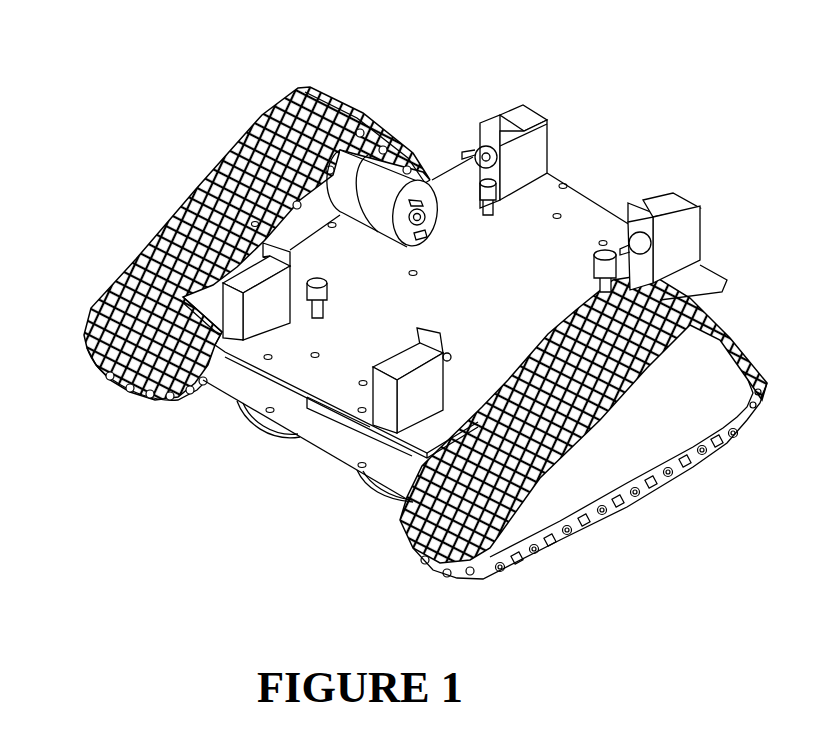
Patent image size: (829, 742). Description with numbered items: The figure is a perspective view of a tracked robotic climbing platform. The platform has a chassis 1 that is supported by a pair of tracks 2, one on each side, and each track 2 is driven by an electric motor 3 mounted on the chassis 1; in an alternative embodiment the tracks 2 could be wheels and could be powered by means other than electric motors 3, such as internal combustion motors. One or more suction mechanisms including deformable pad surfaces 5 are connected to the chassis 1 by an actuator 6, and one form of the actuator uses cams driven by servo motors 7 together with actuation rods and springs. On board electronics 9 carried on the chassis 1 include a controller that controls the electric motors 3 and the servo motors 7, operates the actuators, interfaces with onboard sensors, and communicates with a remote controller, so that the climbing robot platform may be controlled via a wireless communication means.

The chassis 1 is at (592, 207).
The tracks 2 is at (358, 112).
The electric motor 3 is at (407, 178).
The deformable pad surfaces 5 is at (257, 423).
The actuator 6 is at (602, 247).
The servo motors 7 is at (528, 122).
The on board electronics 9 is at (383, 413).